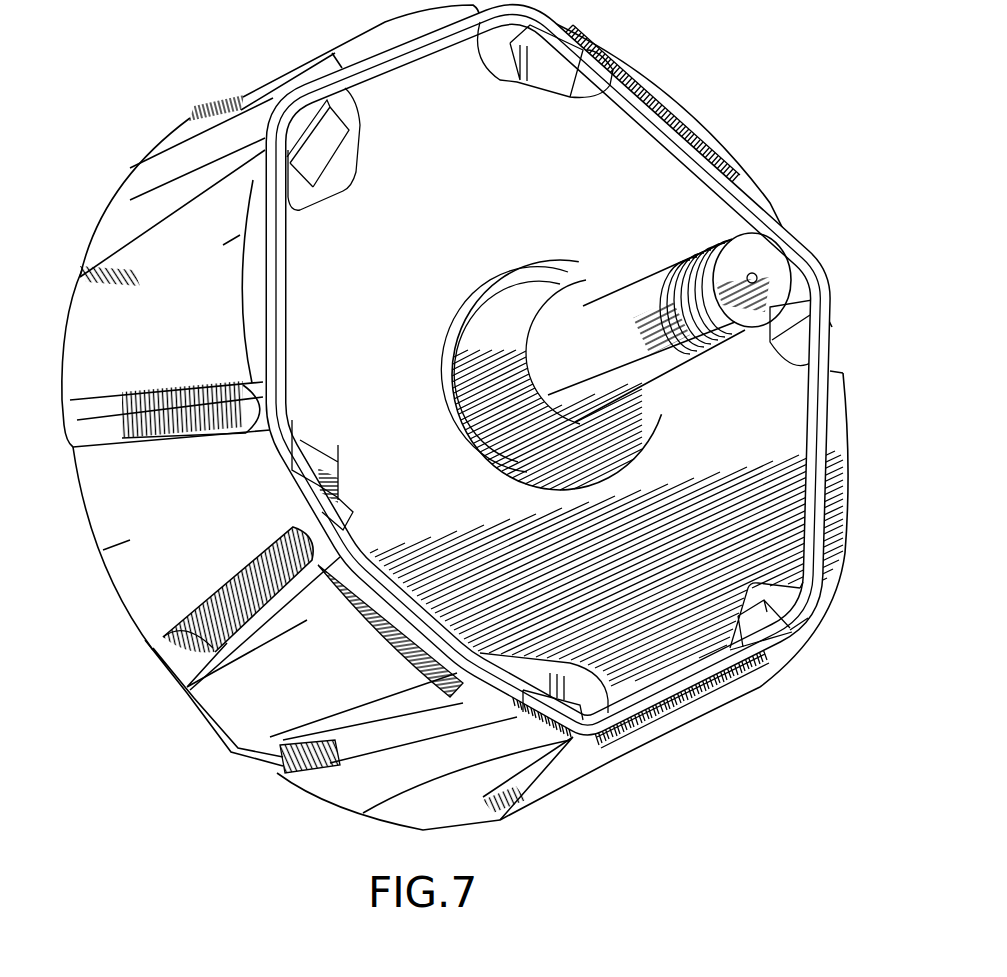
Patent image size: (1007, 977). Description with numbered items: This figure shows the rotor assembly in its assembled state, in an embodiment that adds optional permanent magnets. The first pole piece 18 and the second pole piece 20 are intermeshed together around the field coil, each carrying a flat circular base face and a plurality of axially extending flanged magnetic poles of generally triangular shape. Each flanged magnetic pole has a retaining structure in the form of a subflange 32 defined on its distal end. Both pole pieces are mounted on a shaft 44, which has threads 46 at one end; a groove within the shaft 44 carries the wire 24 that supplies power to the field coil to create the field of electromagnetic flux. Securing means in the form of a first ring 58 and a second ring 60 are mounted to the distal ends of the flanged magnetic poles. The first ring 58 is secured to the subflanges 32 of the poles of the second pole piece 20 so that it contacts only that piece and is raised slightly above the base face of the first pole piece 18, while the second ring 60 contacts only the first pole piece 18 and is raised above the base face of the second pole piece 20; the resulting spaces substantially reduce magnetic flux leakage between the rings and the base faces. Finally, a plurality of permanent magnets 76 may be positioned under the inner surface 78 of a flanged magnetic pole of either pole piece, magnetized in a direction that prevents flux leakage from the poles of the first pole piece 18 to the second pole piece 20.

The first pole piece 18 is at (797, 435).
The second pole piece 20 is at (80, 528).
The wire 24 is at (222, 597).
The subflange 32 is at (555, 58).
The shaft 44 is at (589, 318).
The threads 46 is at (745, 350).
The first ring 58 is at (763, 667).
The second ring 60 is at (260, 760).
The permanent magnets 76 is at (323, 153).
The inner surface 78 is at (806, 620).